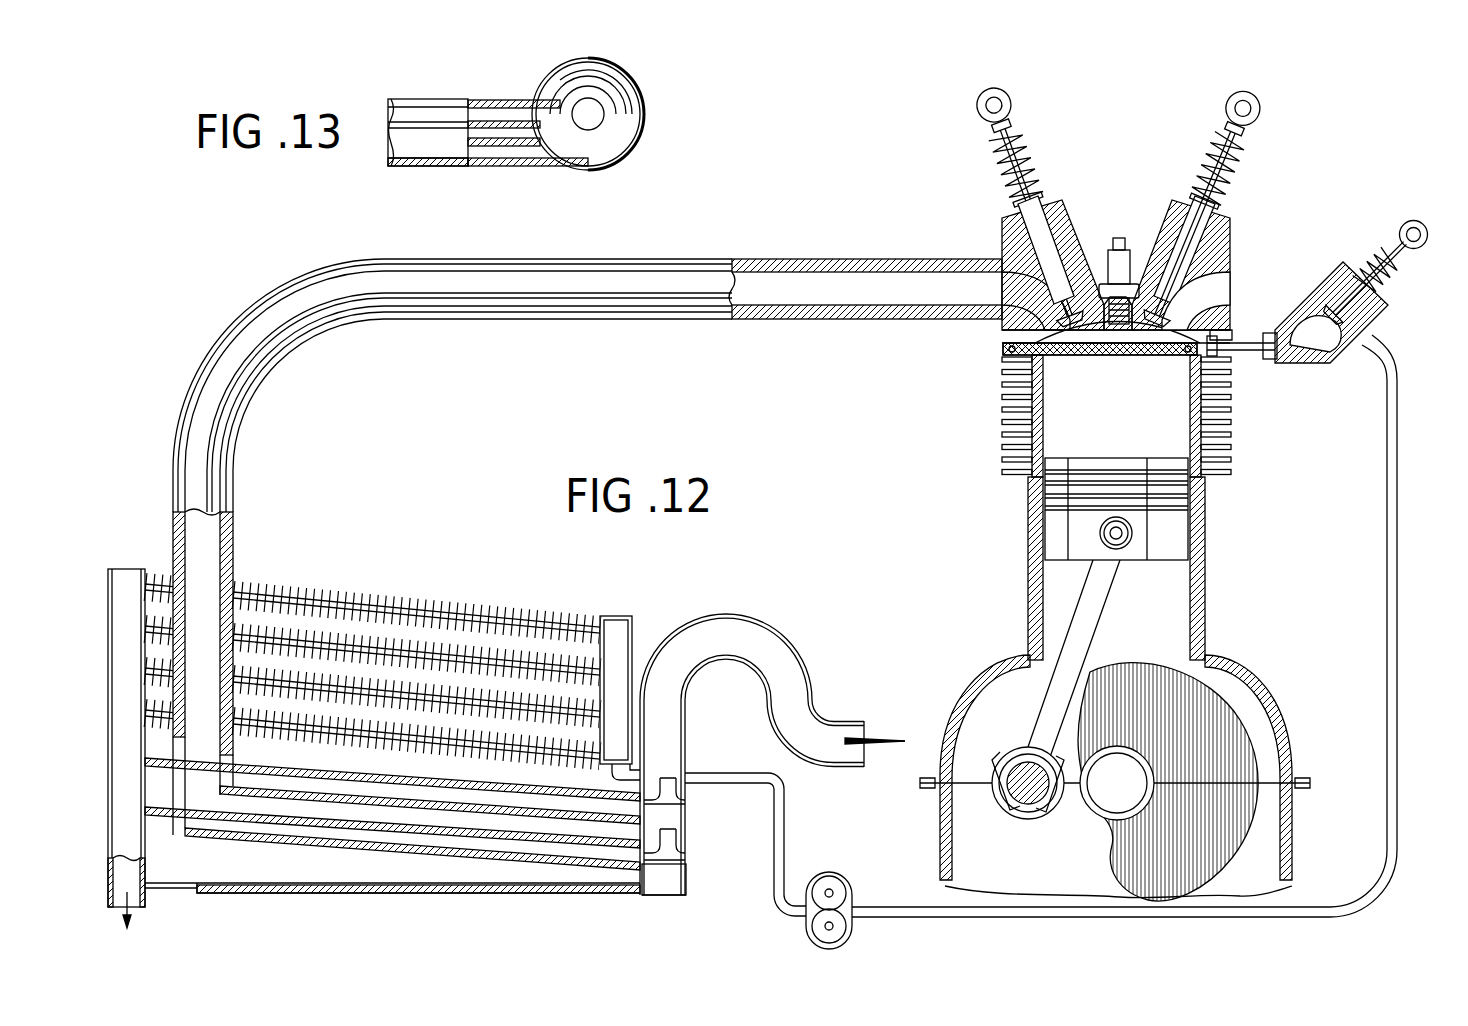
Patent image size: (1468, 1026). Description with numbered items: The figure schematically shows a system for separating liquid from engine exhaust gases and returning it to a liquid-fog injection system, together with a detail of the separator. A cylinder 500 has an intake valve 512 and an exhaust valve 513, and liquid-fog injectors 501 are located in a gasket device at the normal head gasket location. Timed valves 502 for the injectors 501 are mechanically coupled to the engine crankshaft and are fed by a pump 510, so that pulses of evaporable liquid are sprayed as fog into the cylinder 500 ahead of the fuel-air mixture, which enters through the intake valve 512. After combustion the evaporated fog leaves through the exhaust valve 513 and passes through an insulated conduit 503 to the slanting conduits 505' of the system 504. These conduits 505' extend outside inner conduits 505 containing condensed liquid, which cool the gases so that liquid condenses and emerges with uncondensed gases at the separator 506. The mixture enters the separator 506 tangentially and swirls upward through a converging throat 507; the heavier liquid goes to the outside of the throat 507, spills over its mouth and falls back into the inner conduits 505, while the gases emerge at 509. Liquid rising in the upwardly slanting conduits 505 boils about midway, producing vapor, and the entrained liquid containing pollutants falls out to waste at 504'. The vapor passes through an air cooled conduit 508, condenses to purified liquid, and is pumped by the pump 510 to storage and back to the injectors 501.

In FIG. 12, the cylinder 500 is at (1173, 428).
In FIG. 12, the liquid-fog injectors 501 is at (1177, 353).
In FIG. 12, the timed valves 502 is at (1318, 300).
In FIG. 12, the insulated conduit 503 is at (288, 360).
In FIG. 12, the system 504 is at (105, 706).
In FIG. 12, the waste outlet 504' is at (123, 907).
In FIG. 13, the inner conduits 505 is at (514, 98).
In FIG. 12, the inner conduits 505 is at (392, 804).
In FIG. 13, the slanting conduits 505' is at (528, 170).
In FIG. 12, the slanting conduits 505' is at (392, 826).
In FIG. 13, the separator 506 is at (638, 124).
In FIG. 12, the separator 506 is at (674, 882).
In FIG. 13, the converging throat 507 is at (613, 100).
In FIG. 12, the converging throat 507 is at (676, 836).
In FIG. 12, the air cooled conduit 508 is at (372, 592).
In FIG. 12, the gas outlet 509 is at (847, 720).
In FIG. 12, the pump 510 is at (852, 928).
In FIG. 12, the intake valve 512 is at (1197, 290).
In FIG. 12, the exhaust valve 513 is at (1050, 290).